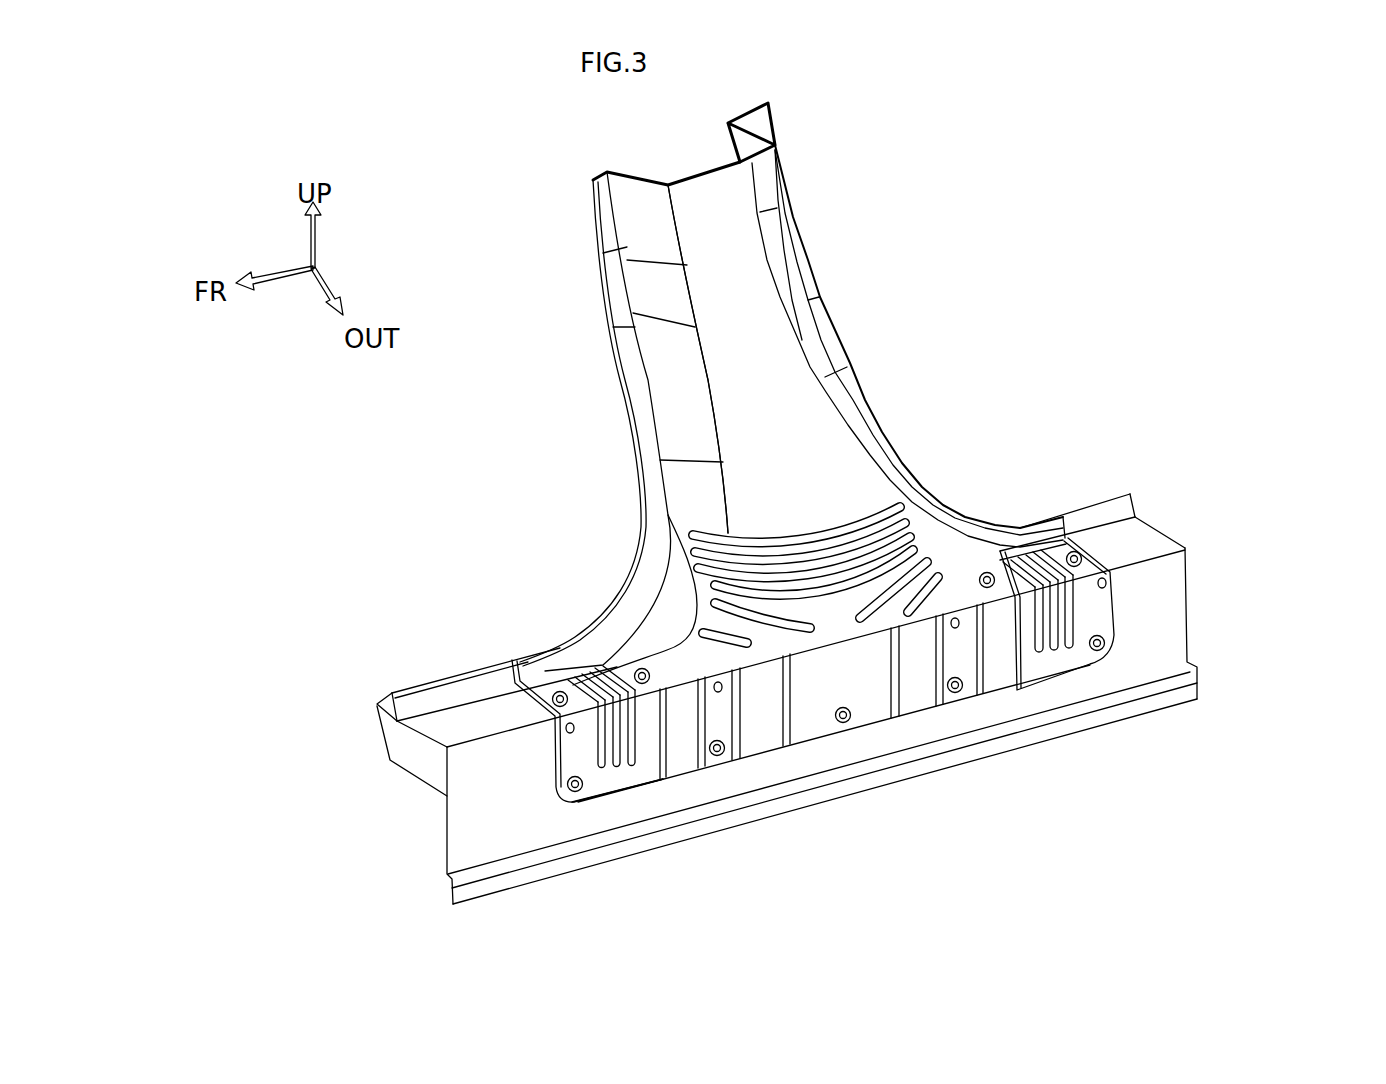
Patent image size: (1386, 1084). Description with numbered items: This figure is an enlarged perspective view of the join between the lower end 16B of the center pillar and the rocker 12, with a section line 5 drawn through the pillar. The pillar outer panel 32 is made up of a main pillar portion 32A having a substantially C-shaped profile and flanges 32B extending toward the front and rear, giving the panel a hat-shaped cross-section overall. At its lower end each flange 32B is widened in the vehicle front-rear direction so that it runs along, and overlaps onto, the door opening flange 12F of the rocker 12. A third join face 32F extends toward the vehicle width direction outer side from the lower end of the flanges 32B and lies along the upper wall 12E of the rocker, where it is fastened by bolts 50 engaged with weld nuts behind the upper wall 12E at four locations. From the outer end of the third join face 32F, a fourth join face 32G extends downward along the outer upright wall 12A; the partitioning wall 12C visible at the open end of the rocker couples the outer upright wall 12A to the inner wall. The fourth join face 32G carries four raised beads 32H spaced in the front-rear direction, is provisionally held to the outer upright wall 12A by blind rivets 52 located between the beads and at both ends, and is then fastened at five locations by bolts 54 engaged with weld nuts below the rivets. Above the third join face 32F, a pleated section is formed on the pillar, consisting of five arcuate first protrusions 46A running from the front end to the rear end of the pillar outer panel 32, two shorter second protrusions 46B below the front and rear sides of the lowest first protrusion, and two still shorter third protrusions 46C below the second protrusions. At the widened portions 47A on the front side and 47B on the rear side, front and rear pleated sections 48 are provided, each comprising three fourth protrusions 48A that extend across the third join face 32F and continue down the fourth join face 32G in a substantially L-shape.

The section line 5 is at (715, 178).
The rocker 12 is at (1042, 751).
The outer upright wall 12A is at (1163, 627).
The partitioning wall 12C is at (420, 767).
The upper wall 12E is at (1137, 537).
The door opening flange 12F is at (1120, 513).
The lower end of the center pillar 16B is at (826, 236).
The pillar outer panel 32 is at (826, 285).
The main pillar portion 32A is at (780, 355).
The flanges 32B is at (856, 403).
The third join face 32F is at (544, 688).
The fourth join face 32G is at (597, 787).
The raised beads 32H is at (988, 690).
The first protrusions 46A is at (822, 542).
The second protrusions 46B is at (945, 572).
The third protrusions 46C is at (950, 590).
The widened portion on the front side 47A is at (563, 750).
The widened portion on the rear side 47B is at (1063, 660).
The front and rear pleated sections 48 is at (1025, 672).
The fourth protrusions 48A is at (1053, 607).
The bolts 50 is at (1095, 565).
The blind rivets 52 is at (563, 725).
The bolts 54 is at (845, 722).